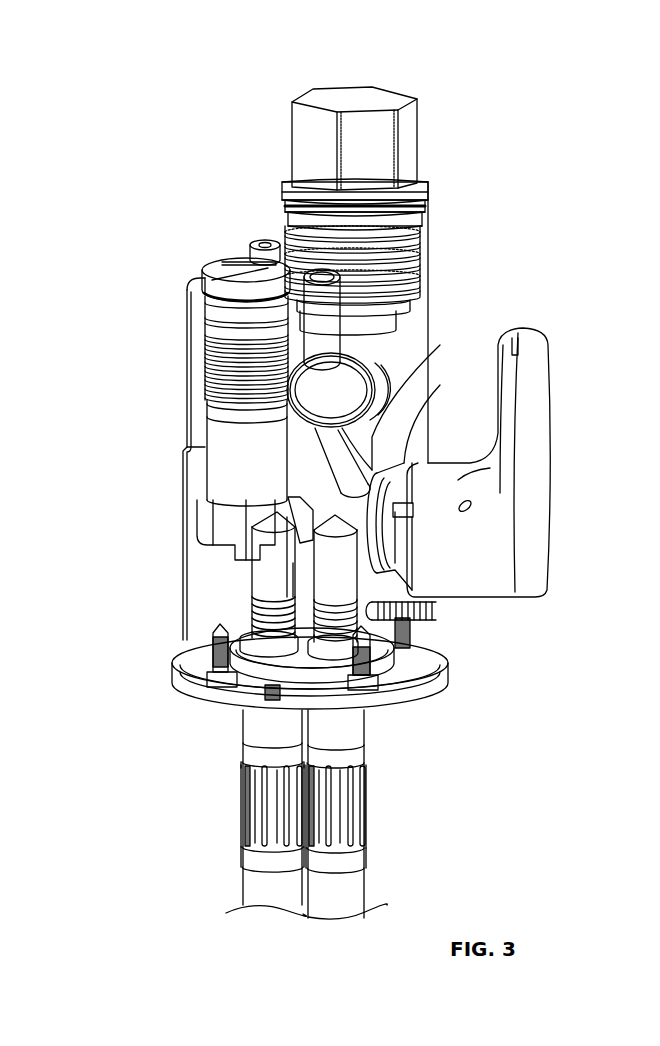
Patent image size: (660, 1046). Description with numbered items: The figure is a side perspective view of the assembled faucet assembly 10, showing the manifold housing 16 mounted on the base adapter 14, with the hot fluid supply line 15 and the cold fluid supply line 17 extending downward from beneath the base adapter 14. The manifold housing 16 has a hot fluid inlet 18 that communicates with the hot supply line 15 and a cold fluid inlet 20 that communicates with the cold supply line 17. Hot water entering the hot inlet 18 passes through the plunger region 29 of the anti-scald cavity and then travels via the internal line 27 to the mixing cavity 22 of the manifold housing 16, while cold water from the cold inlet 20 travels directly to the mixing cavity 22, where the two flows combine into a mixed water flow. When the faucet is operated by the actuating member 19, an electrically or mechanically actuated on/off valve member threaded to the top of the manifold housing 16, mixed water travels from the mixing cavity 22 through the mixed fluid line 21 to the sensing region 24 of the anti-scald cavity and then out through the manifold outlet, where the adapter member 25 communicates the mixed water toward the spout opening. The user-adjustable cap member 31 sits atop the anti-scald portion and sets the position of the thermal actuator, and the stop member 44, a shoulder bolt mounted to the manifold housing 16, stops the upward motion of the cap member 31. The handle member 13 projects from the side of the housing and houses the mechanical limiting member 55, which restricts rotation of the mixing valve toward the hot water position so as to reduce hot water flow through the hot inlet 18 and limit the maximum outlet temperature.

The faucet assembly 10 is at (278, 84).
The handle member 13 is at (540, 498).
The base adapter 14 is at (412, 700).
The hot fluid supply line 15 is at (262, 882).
The manifold housing 16 is at (430, 230).
The cold fluid supply line 17 is at (350, 888).
The hot fluid inlet 18 is at (258, 567).
The actuating member 19 is at (385, 150).
The cold fluid inlet 20 is at (435, 660).
The mixed fluid line 21 is at (330, 453).
The mixing cavity 22 is at (361, 498).
The sensing region 24 is at (216, 326).
The adapter member 25 is at (340, 305).
The internal line 27 is at (297, 493).
The plunger region 29 is at (234, 489).
The user-adjustable cap member 31 is at (222, 265).
The stop member 44 is at (263, 240).
The mechanical limiting member 55 is at (412, 482).